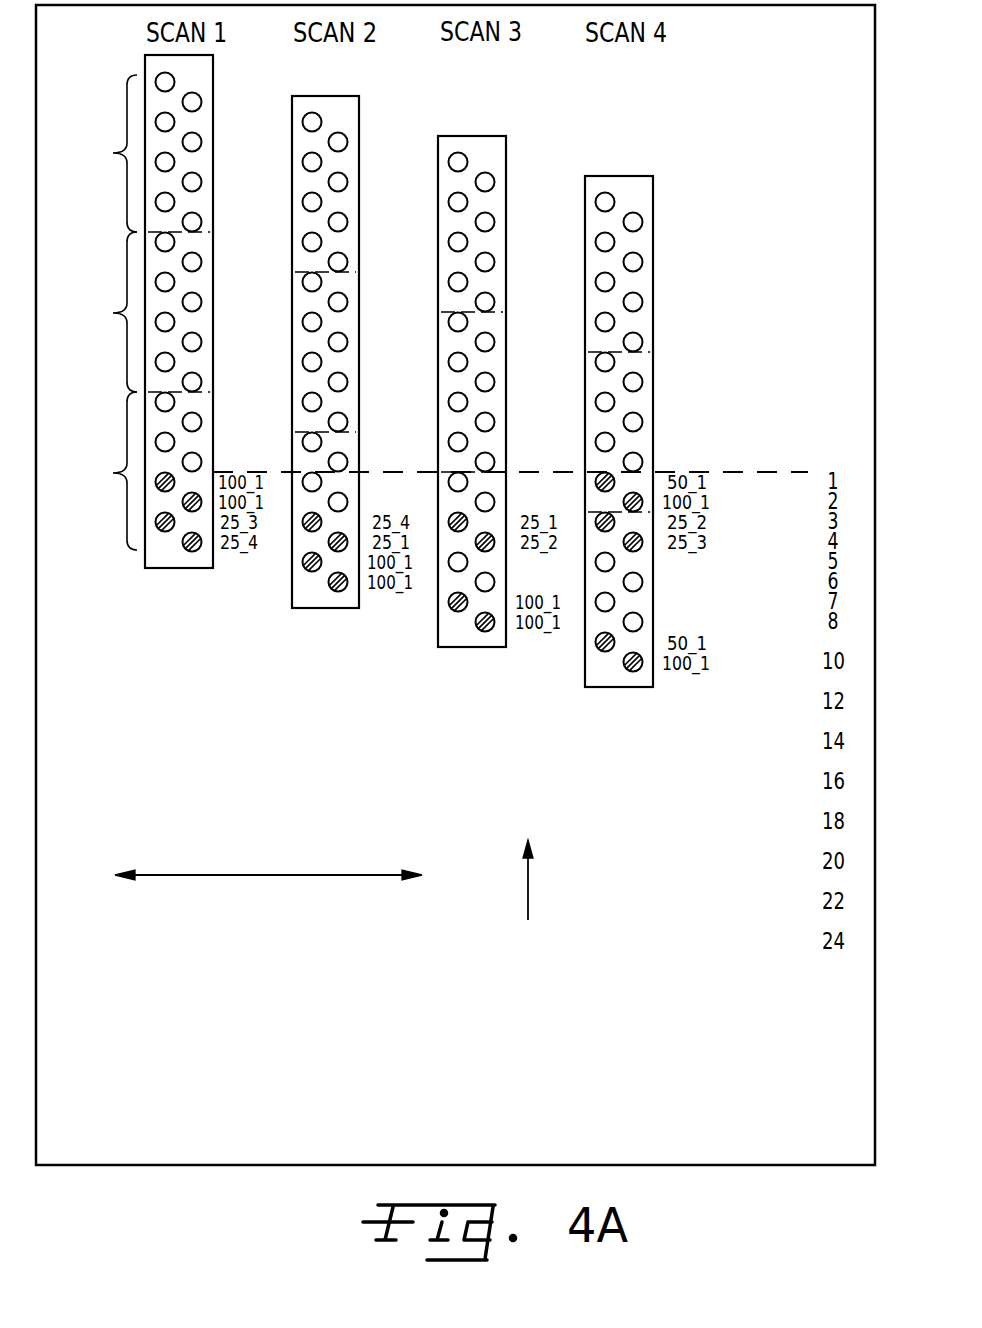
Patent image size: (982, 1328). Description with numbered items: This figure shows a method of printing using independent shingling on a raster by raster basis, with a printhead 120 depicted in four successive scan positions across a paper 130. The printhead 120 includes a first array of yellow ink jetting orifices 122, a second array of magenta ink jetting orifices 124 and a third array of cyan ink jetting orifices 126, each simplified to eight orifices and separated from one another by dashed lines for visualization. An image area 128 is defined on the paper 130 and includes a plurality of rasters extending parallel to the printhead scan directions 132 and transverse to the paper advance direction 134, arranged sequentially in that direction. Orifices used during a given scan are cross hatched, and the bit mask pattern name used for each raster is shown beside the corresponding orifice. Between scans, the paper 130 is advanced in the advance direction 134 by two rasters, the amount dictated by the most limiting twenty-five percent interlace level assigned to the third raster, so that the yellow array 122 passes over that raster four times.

The printhead 120 is at (213, 115).
The first array of yellow ink jetting orifices 122 is at (102, 471).
The second array of magenta ink jetting orifices 124 is at (102, 312).
The third array of cyan ink jetting orifices 126 is at (102, 153).
The image area 128 is at (735, 464).
The paper 130 is at (455, 585).
The printhead scan directions 132 is at (268, 891).
The paper advance direction 134 is at (620, 895).